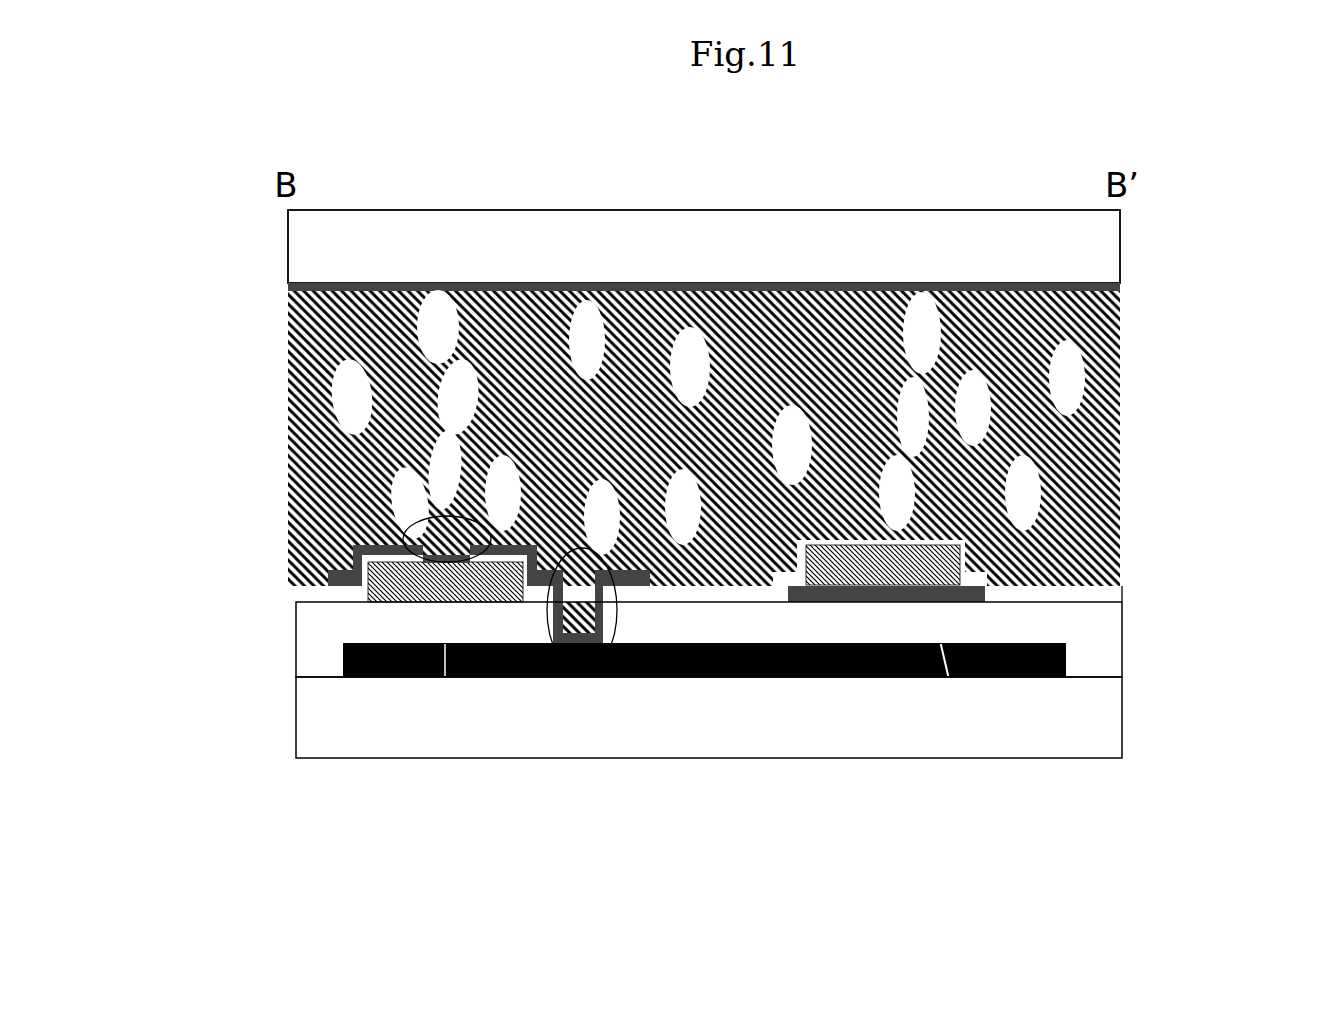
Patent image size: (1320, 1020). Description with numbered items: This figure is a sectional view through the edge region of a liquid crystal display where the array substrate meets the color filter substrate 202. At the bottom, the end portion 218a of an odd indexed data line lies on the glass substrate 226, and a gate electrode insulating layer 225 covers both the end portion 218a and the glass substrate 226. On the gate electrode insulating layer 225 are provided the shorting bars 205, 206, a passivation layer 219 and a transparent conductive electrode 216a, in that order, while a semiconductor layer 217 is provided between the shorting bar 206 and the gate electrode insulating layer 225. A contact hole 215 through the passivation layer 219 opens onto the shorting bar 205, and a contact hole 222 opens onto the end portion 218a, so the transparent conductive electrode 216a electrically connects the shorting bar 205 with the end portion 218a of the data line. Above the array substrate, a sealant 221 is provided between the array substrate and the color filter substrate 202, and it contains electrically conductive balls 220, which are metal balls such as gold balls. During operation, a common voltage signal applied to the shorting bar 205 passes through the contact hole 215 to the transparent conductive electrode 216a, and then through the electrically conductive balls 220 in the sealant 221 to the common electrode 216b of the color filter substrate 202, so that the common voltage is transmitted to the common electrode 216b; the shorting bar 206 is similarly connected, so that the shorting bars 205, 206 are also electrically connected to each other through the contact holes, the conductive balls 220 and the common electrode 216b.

The color filter substrate 202 is at (520, 246).
The common electrode 216b is at (322, 287).
The sealant 221 is at (1095, 443).
The electrically conductive balls 220 is at (335, 398).
The transparent conductive electrode 216a is at (318, 553).
The shorting bar 205 is at (328, 563).
The passivation layer 219 is at (327, 591).
The contact hole 215 is at (445, 588).
The contact hole 222 is at (589, 681).
The shorting bar 206 is at (930, 562).
The semiconductor layer 217 is at (930, 598).
The gate electrode insulating layer 225 is at (332, 634).
The end portion of the odd indexed data line 218a is at (368, 664).
The glass substrate 226 is at (363, 717).